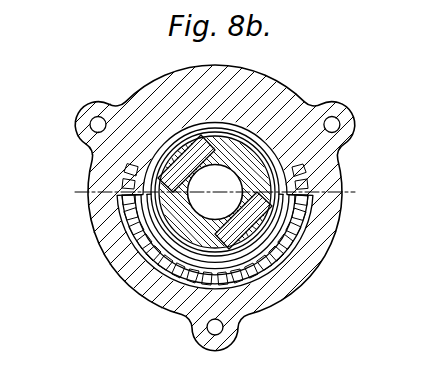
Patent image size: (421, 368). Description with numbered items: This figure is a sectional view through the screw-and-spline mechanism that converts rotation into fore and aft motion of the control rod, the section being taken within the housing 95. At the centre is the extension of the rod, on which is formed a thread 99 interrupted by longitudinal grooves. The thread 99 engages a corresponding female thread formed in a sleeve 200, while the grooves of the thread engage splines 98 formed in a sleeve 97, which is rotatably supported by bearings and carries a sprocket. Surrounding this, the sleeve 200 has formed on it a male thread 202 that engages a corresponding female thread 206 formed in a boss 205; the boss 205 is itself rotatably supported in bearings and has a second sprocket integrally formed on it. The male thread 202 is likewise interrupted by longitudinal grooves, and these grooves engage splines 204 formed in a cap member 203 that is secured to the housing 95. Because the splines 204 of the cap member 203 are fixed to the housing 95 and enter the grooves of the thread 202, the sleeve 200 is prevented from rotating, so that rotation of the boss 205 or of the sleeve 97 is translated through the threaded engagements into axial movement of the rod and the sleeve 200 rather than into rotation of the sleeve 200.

The housing 95 is at (322, 238).
The sleeve 97 is at (256, 138).
The splines 98 is at (235, 218).
The thread 99 is at (160, 242).
The sleeve 200 is at (200, 240).
The male thread 202 is at (140, 160).
The cap member 203 is at (247, 120).
The splines 204 is at (172, 128).
The boss 205 is at (135, 213).
The female thread 206 is at (120, 199).